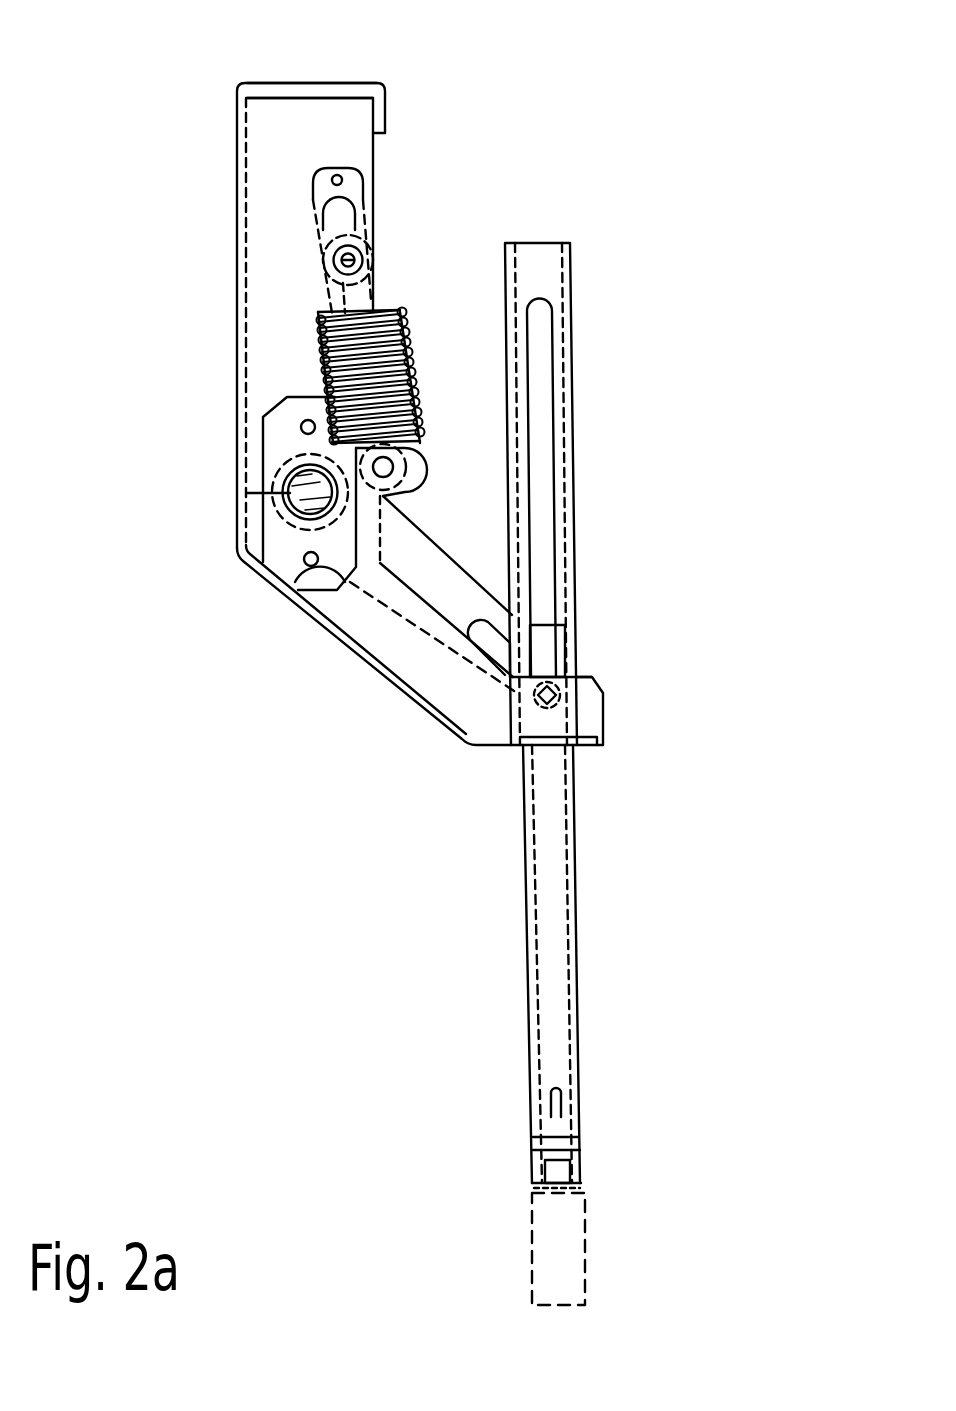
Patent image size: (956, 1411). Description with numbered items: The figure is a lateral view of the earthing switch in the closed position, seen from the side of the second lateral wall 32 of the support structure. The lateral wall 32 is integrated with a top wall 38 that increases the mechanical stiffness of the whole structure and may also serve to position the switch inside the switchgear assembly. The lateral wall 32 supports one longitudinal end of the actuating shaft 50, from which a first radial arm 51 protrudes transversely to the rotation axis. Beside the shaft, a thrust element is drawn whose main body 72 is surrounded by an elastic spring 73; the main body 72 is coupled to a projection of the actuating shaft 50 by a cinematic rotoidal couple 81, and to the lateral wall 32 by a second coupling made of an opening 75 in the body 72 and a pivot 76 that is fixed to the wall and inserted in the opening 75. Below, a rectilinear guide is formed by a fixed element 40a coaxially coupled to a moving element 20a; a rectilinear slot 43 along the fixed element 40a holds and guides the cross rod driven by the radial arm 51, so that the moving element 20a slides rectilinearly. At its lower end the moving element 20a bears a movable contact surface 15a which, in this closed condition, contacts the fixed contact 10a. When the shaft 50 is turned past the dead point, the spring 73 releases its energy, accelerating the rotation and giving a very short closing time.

The top wall 38 is at (321, 74).
The second lateral wall 32 is at (233, 153).
The main body 72 is at (352, 188).
The opening 75 is at (342, 216).
The pivot 76 is at (362, 262).
The elastic spring 73 is at (327, 353).
The actuating shaft 50 is at (285, 495).
The cinematic rotoidal couple 81 is at (427, 468).
The first radial arm 51 is at (440, 570).
The fixed element 40a is at (552, 278).
The rectilinear slot 43 is at (547, 493).
The moving element 20a is at (555, 888).
The movable contact surface 15a is at (535, 1180).
The fixed contact 10a is at (542, 1267).